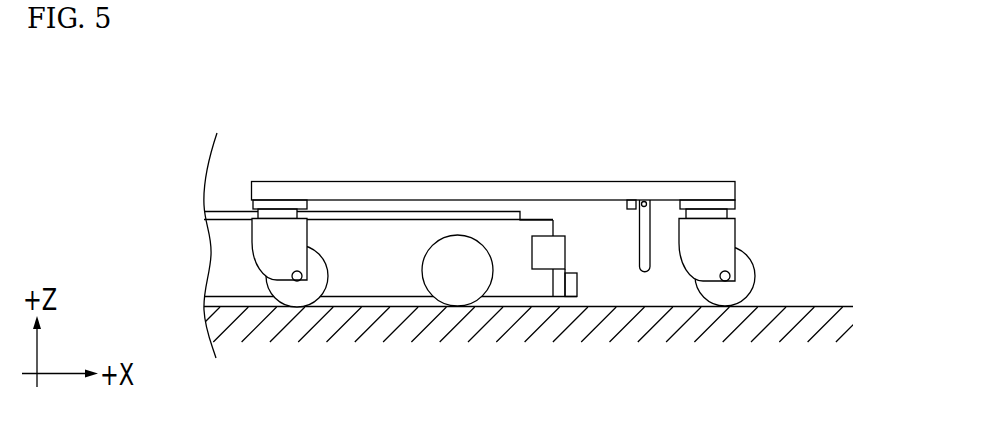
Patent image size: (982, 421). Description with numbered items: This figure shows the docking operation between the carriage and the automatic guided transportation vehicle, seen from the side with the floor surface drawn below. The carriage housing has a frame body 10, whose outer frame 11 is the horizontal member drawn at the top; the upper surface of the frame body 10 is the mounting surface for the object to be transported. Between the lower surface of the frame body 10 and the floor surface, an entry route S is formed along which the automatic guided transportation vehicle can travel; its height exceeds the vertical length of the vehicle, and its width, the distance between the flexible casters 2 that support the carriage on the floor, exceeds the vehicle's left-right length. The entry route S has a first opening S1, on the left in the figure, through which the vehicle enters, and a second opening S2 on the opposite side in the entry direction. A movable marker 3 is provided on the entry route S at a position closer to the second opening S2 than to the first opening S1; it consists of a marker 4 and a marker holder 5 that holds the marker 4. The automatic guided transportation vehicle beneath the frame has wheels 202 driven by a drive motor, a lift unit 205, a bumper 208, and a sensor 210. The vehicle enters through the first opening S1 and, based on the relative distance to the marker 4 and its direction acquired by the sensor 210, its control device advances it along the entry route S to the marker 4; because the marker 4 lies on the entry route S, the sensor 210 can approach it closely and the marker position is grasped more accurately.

The flexible caster 2 is at (262, 285).
The movable marker 3 is at (678, 163).
The marker 4 is at (645, 230).
The marker holder 5 is at (645, 200).
The frame body 10 is at (493, 189).
The outer frame 11 is at (494, 157).
The wheels 202 is at (447, 291).
The lift unit 205 is at (368, 215).
The bumper 208 is at (572, 285).
The sensor 210 is at (540, 259).
The entry route S is at (600, 222).
The first opening S1 is at (239, 179).
The second opening S2 is at (771, 237).